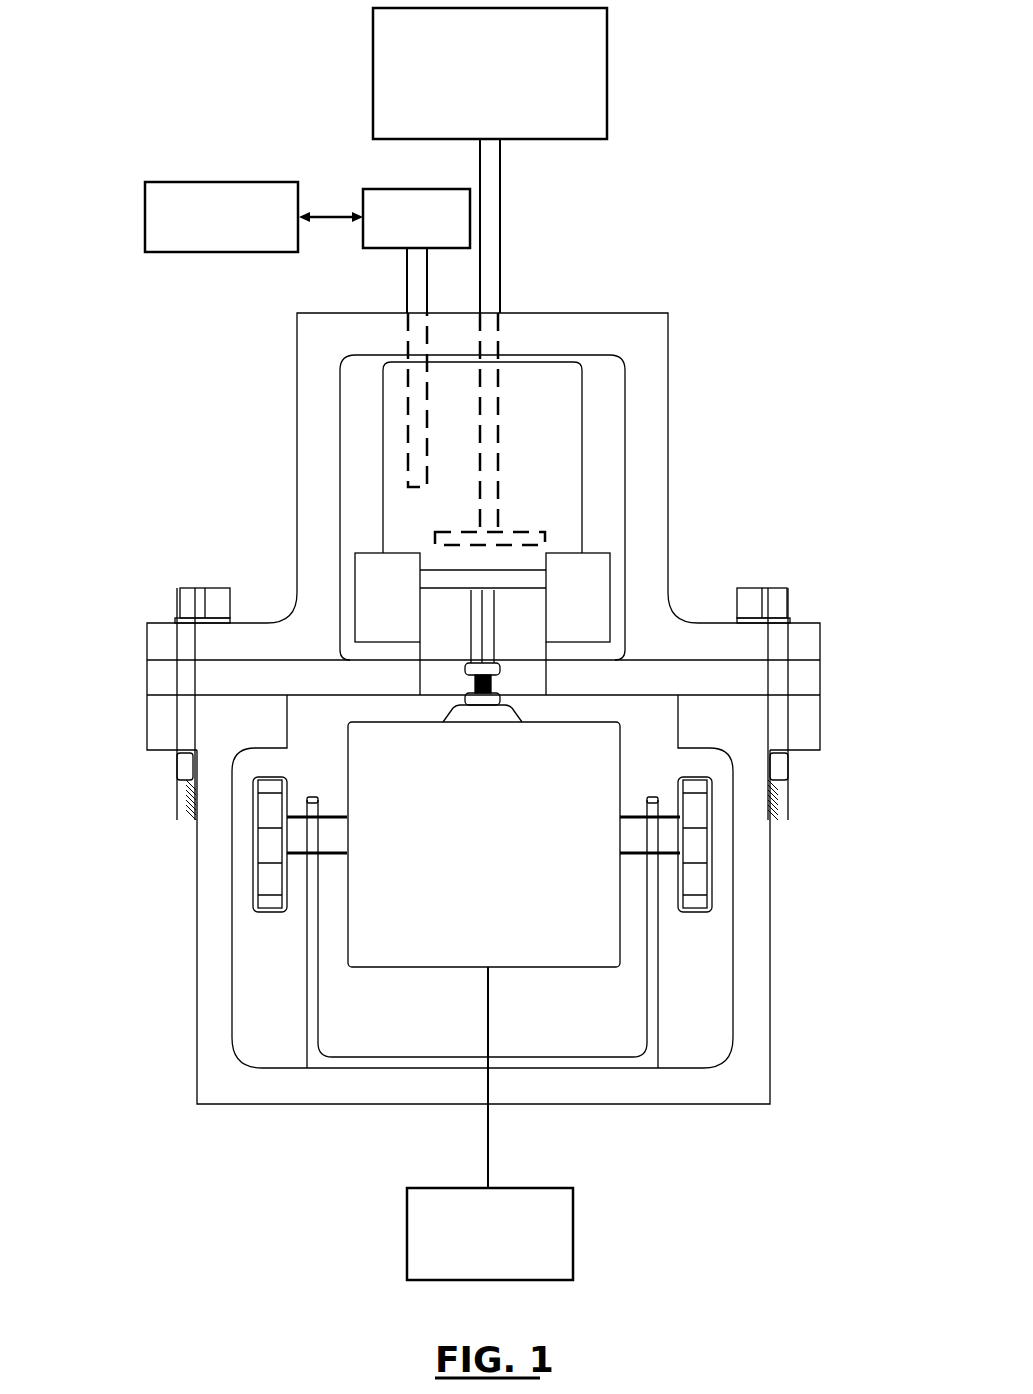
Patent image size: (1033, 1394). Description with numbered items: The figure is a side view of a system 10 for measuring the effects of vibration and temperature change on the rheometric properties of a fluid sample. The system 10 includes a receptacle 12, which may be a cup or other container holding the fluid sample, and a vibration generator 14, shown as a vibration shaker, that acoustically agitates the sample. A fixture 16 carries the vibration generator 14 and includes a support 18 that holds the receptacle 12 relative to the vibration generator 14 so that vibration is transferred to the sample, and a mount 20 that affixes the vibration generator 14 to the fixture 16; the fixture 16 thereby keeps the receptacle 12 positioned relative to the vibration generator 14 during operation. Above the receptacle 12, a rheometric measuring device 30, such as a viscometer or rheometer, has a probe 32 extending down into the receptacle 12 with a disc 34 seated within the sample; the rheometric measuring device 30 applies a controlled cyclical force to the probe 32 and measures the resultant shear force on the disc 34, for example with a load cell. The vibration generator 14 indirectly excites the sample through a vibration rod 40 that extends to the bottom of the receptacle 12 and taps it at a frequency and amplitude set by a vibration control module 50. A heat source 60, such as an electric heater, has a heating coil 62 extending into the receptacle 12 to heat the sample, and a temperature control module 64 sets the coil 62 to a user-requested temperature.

The system 10 is at (244, 31).
The receptacle 12 is at (581, 423).
The vibration generator 14 is at (592, 965).
The fixture 16 is at (165, 635).
The support 18 is at (600, 553).
The mount 20 is at (307, 1030).
The rheometric measuring device 30 is at (607, 45).
The probe 32 is at (500, 395).
The disc 34 is at (527, 532).
The vibration rod 40 is at (470, 642).
The vibration control module 50 is at (575, 1240).
The heat source 60 is at (363, 190).
The heating coil 62 is at (407, 397).
The temperature control module 64 is at (145, 188).